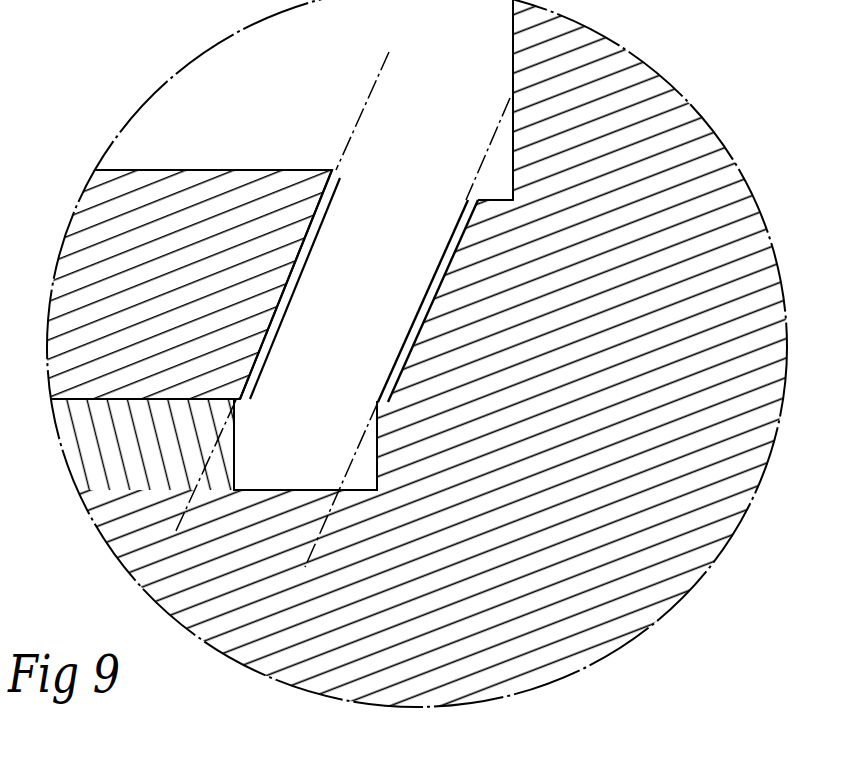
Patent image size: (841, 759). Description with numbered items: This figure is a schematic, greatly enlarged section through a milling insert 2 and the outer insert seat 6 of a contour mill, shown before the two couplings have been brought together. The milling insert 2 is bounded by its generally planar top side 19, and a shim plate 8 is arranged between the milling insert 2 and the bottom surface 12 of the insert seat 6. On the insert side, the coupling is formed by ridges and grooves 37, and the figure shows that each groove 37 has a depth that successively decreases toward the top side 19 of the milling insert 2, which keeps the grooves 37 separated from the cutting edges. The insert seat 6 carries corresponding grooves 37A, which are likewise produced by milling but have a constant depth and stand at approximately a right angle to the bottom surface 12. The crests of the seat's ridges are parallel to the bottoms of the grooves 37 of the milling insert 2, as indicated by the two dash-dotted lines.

The milling insert 2 is at (260, 150).
The outer insert seat 6 is at (413, 261).
The shim plate 8 is at (77, 462).
The bottom surface 12 is at (287, 490).
The top side 19 is at (197, 169).
The groove 37 is at (259, 371).
The groove of the insert seat 37A is at (433, 288).